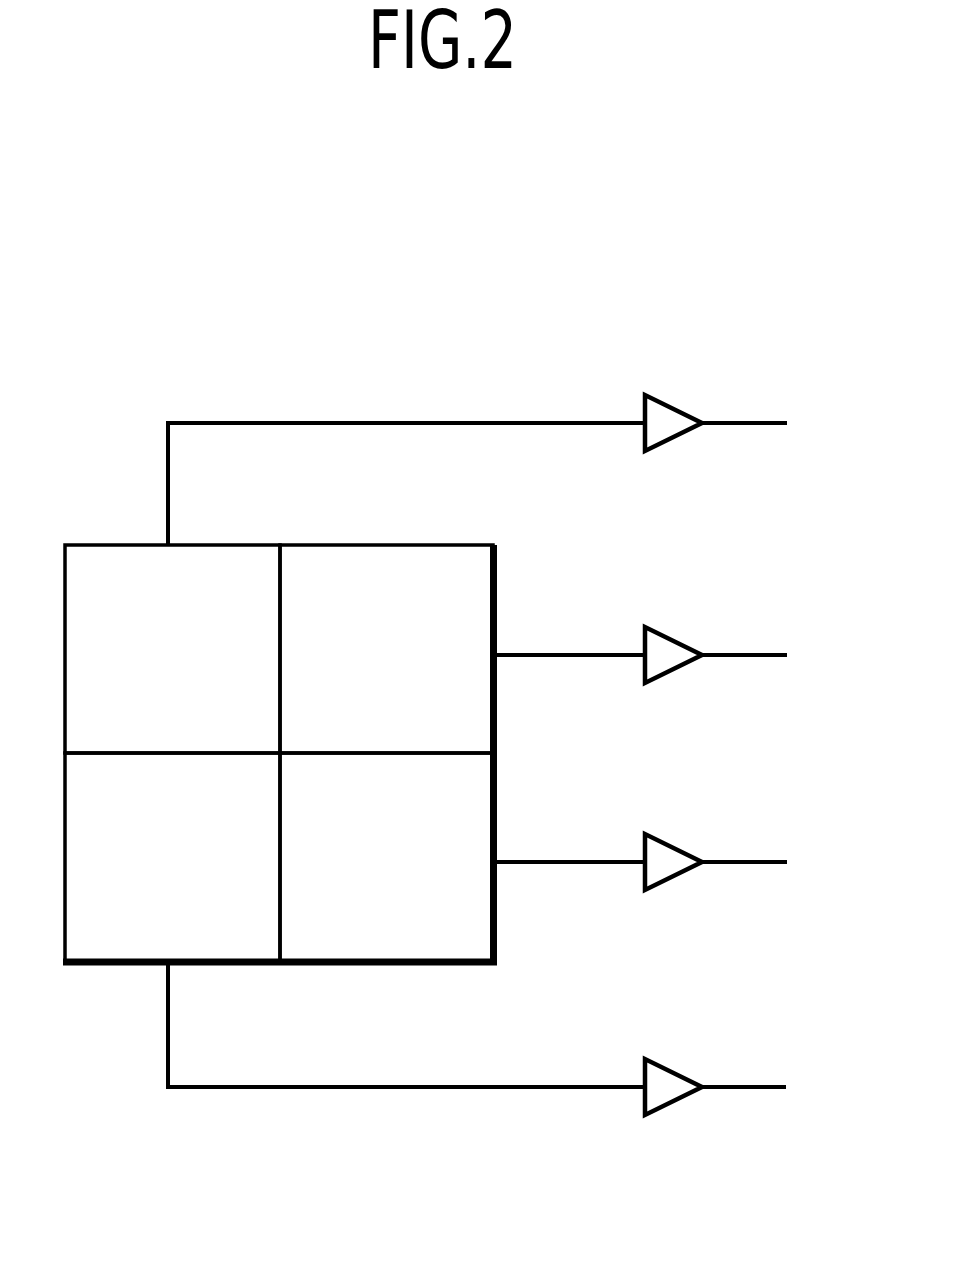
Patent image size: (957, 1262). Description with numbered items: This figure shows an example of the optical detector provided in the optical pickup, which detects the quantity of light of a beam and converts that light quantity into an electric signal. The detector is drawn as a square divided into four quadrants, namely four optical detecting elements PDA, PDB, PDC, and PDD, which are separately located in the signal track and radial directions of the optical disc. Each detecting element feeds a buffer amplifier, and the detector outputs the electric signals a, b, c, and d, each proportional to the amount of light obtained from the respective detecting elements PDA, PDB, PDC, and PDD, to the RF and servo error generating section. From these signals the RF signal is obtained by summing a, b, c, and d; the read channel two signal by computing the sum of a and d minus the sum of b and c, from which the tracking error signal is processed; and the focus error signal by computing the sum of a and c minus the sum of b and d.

The optical detecting element PDA is at (172, 649).
The optical detecting element PDB is at (386, 649).
The optical detecting element PDC is at (386, 857).
The optical detecting element PDD is at (172, 857).
The electric signal a is at (513, 467).
The electric signal b is at (676, 653).
The electric signal c is at (674, 860).
The electric signal d is at (514, 1038).